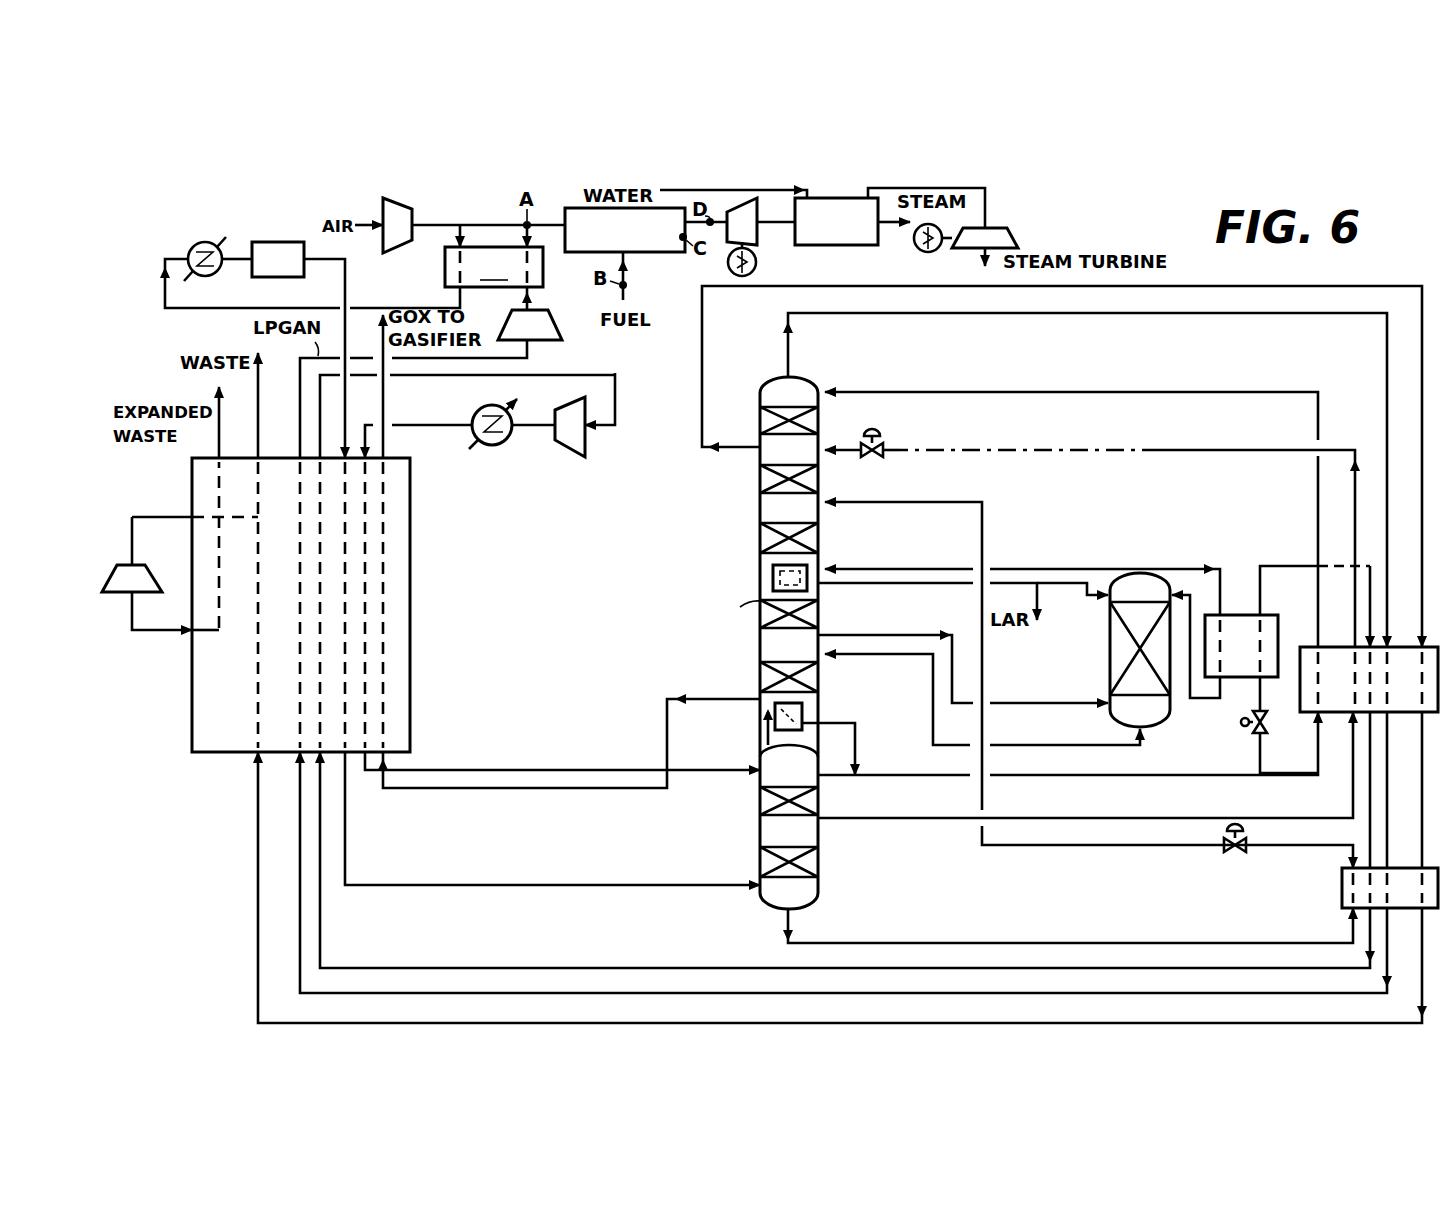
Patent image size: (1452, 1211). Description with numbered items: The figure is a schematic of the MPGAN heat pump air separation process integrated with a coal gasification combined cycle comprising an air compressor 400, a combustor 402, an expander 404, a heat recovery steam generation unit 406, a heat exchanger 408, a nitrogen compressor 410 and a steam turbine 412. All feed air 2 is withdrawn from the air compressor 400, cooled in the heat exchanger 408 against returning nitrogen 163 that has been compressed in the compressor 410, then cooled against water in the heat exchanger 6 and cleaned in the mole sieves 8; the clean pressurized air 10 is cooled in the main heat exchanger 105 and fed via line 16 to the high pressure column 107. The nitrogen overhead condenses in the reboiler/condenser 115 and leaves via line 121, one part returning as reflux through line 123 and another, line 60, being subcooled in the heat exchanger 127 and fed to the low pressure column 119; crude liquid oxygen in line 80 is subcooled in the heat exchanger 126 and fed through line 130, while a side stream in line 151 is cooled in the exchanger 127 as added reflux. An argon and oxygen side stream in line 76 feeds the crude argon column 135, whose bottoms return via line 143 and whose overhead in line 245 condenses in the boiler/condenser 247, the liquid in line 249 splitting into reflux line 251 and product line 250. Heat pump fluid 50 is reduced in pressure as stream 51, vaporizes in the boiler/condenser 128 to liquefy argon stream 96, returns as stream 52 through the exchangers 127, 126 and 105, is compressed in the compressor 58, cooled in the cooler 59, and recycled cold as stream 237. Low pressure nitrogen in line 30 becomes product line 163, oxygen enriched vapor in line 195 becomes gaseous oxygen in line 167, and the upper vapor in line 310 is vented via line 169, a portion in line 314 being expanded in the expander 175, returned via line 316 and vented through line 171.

The feed air stream 2 is at (264, 312).
The heat exchanger 6 is at (201, 242).
The mole sieves 8 is at (268, 242).
The clean, pressurized air stream 10 is at (346, 278).
The line 16 is at (496, 886).
The line 30 is at (792, 368).
The stream 50 is at (1263, 745).
The stream 51 is at (1263, 703).
The stream 52 is at (1291, 565).
The compressor 58 is at (560, 444).
The cooler 59 is at (486, 449).
The line 60 is at (1061, 776).
The line 76 is at (889, 636).
The line 80 is at (1148, 943).
The stream 96 is at (1158, 568).
The heat exchanger 105 is at (192, 714).
The high pressure column 107 is at (818, 826).
The reboiler/condenser 115 is at (803, 729).
The low pressure column 119 is at (757, 512).
The line 121 is at (851, 760).
The line 123 is at (838, 778).
The heat exchanger 126 is at (1339, 882).
The heat exchanger 127 is at (1330, 714).
The boiler/condenser 128 is at (1268, 613).
The line 130 is at (877, 499).
The crude argon column 135 is at (1108, 634).
The line 143 is at (1063, 746).
The line 151 is at (1163, 819).
The line 163 is at (298, 416).
The line 167 is at (386, 438).
The line 169 is at (258, 394).
The line 171 is at (220, 421).
The expander 175 is at (112, 574).
The line 195 is at (716, 701).
The stream 237 is at (530, 771).
The line 245 is at (1100, 560).
The boiler/condenser 247 is at (826, 565).
The line 249 is at (871, 585).
The line 250 is at (1013, 601).
The line 251 is at (1085, 586).
The line 310 is at (702, 373).
The line 314 is at (167, 516).
The line 316 is at (150, 634).
The air compressor 400 is at (420, 204).
The combustor 402 is at (650, 254).
The expander 404 is at (762, 242).
The heat recovery steam generation (HRSG) unit 406 is at (875, 261).
The heat exchanger 408 is at (494, 267).
The nitrogen compressor 410 is at (553, 342).
The steam turbine 412 is at (1016, 231).